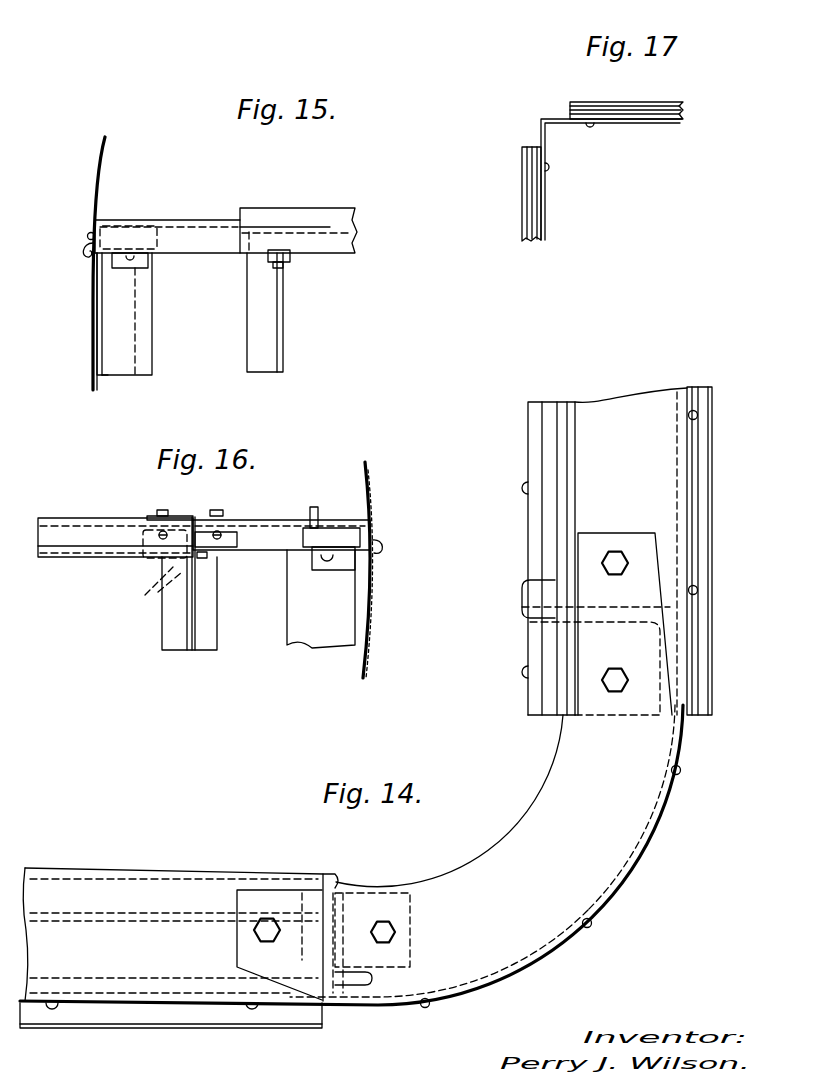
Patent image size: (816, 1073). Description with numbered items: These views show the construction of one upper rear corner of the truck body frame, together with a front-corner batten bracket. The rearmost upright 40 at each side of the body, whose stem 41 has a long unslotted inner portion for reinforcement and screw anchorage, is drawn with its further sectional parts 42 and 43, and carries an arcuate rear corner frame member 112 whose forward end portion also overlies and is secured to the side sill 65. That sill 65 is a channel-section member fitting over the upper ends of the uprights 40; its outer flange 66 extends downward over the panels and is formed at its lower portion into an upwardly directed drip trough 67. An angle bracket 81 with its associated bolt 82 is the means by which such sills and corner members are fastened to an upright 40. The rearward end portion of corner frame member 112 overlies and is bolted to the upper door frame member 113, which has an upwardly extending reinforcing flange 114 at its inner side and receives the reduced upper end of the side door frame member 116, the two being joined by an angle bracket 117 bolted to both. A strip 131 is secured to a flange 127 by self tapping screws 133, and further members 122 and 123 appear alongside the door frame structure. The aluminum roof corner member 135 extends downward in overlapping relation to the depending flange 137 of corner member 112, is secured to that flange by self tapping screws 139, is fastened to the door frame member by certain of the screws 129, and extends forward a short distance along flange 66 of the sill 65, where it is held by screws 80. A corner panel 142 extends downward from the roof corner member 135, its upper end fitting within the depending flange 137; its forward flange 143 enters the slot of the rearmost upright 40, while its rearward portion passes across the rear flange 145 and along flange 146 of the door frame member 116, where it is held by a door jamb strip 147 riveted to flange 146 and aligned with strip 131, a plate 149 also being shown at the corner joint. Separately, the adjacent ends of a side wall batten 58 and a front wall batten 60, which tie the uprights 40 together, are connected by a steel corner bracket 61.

In FIG. 15, the upright 40 is at (152, 332).
In FIG. 16, the upright 40 is at (166, 652).
In FIG. 14, the upright 40 is at (327, 896).
In FIG. 15, the stem 41 is at (153, 362).
In FIG. 15, the post bottom edge 42 is at (108, 363).
In FIG. 15, the post inner wall 43 is at (102, 362).
In FIG. 17, the wooden batten 58 is at (536, 220).
In FIG. 17, the wooden batten 60 is at (656, 124).
In FIG. 17, the steel corner bracket 61 is at (543, 118).
In FIG. 15, the sill 65 is at (118, 222).
In FIG. 16, the sill 65 is at (88, 521).
In FIG. 14, the sill 65 is at (211, 872).
In FIG. 14, the outer flange 66 is at (132, 992).
In FIG. 15, the drip trough 67 is at (80, 253).
In FIG. 16, the drip trough 67 is at (82, 556).
In FIG. 14, the drip trough 67 is at (143, 1015).
In FIG. 14, the screw 80 is at (52, 1010).
In FIG. 15, the angle bracket 81 is at (146, 268).
In FIG. 16, the angle bracket 81 is at (148, 595).
In FIG. 16, the bolt 82 is at (212, 512).
In FIG. 15, the rear corner frame member 112 is at (194, 221).
In FIG. 16, the rear corner frame member 112 is at (254, 521).
In FIG. 14, the rear corner frame member 112 is at (493, 848).
In FIG. 15, the upper door frame member 113 is at (345, 241).
In FIG. 16, the upper door frame member 113 is at (333, 527).
In FIG. 14, the upper door frame member 113 is at (631, 389).
In FIG. 15, the reinforcing flange 114 is at (333, 214).
In FIG. 16, the reinforcing flange 114 is at (313, 505).
In FIG. 14, the reinforcing flange 114 is at (576, 452).
In FIG. 15, the side door frame member 116 is at (285, 322).
In FIG. 16, the side door frame member 116 is at (322, 640).
In FIG. 14, the side door frame member 116 is at (613, 621).
In FIG. 15, the angle bracket 117 is at (282, 265).
In FIG. 16, the angle bracket 117 is at (341, 565).
In FIG. 14, the edge strip 122 is at (690, 527).
In FIG. 14, the outer edge strip 123 is at (699, 656).
In FIG. 14, the flange 127 is at (559, 401).
In FIG. 14, the screw 129 is at (698, 416).
In FIG. 14, the strip 131 is at (543, 698).
In FIG. 14, the self tapping screw 133 is at (522, 488).
In FIG. 15, the roof corner member 135 is at (92, 180).
In FIG. 16, the roof corner member 135 is at (372, 493).
In FIG. 14, the roof corner member 135 is at (543, 957).
In FIG. 15, the depending flange 137 is at (178, 250).
In FIG. 16, the depending flange 137 is at (262, 545).
In FIG. 14, the depending flange 137 is at (618, 879).
In FIG. 15, the self tapping screw 139 is at (88, 236).
In FIG. 14, the self tapping screw 139 is at (680, 772).
In FIG. 15, the corner panel 142 is at (93, 332).
In FIG. 16, the corner panel 142 is at (367, 662).
In FIG. 14, the corner panel 142 is at (645, 837).
In FIG. 14, the flange 143 is at (326, 938).
In FIG. 14, the rear flange 145 is at (660, 690).
In FIG. 14, the flange 146 is at (623, 606).
In FIG. 14, the door jamb strip 147 is at (522, 597).
In FIG. 14, the connecting plate 149 is at (275, 977).